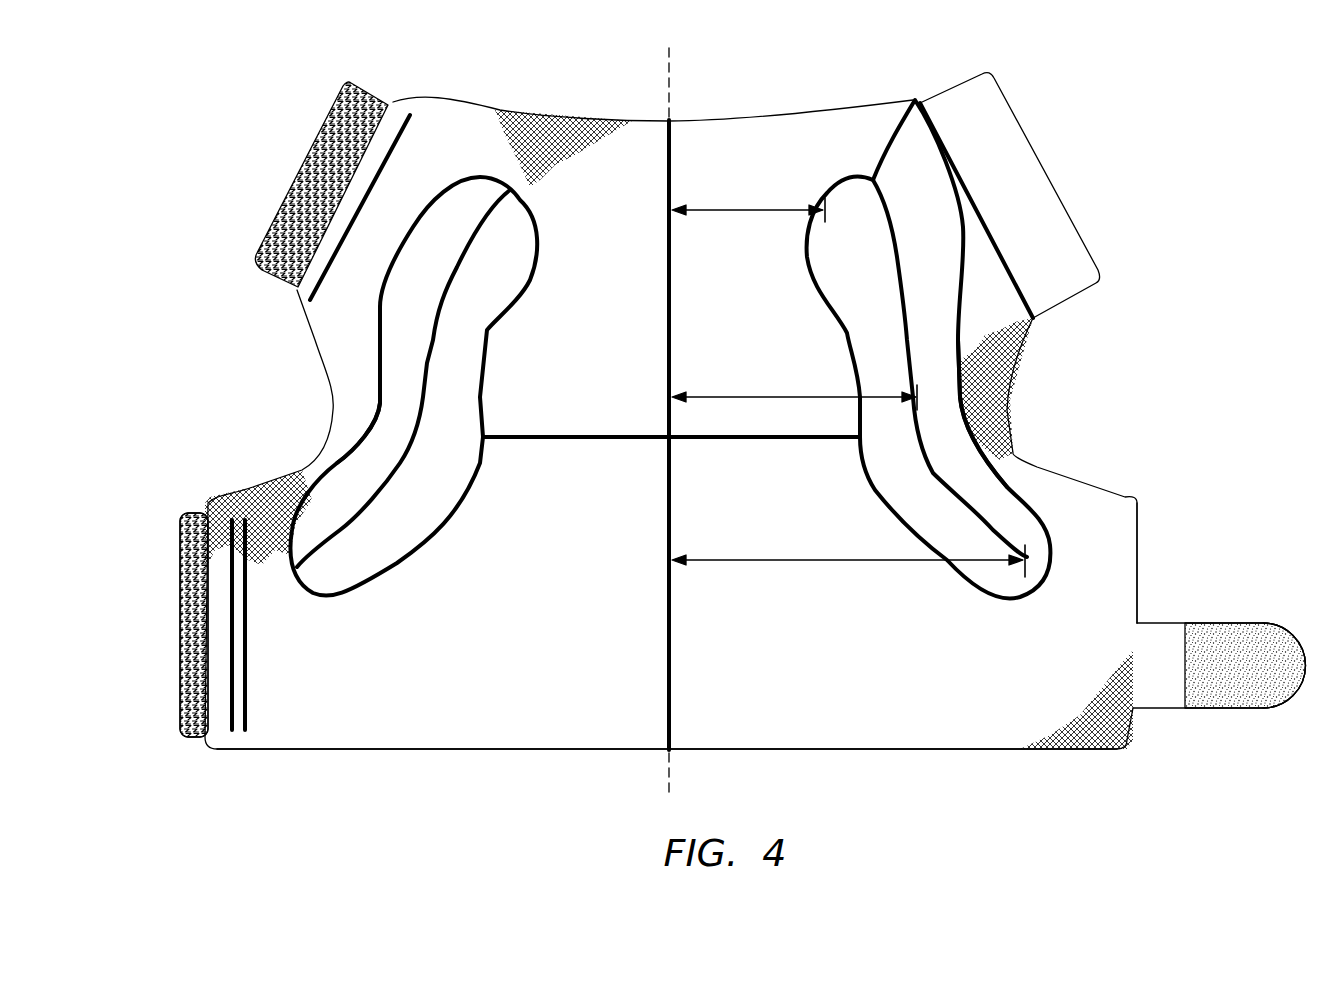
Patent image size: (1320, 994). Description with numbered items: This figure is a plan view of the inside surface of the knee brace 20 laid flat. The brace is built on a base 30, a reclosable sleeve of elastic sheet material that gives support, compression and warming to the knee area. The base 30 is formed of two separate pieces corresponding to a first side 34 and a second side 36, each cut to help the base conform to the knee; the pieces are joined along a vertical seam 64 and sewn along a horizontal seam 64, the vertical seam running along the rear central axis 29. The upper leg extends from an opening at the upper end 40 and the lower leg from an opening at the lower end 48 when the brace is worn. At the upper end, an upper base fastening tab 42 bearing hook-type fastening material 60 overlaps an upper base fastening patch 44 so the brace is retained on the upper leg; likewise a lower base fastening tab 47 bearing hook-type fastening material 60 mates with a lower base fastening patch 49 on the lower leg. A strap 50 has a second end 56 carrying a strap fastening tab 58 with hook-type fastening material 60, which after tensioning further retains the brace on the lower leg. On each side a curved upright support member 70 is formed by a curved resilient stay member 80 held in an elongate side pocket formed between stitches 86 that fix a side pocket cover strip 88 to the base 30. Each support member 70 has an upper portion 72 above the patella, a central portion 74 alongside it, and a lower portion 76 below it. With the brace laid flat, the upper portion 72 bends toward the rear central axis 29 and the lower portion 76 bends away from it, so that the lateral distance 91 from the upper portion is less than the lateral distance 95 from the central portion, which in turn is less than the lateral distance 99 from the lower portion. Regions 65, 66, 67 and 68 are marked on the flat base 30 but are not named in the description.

The knee brace 20 is at (1143, 88).
The rear central axis 29 is at (667, 73).
The base 30 is at (1035, 683).
The first side 34 is at (530, 157).
The second side 36 is at (862, 133).
The upper end 40 is at (440, 130).
The upper base fastening tab 42 is at (290, 203).
The upper base fastening patch 44 is at (1027, 180).
The lower base fastening tab 47 is at (186, 640).
The lower end 48 is at (902, 740).
The lower base fastening patch 49 is at (1130, 518).
The strap 50 is at (1165, 683).
The second end 56 is at (1235, 695).
The strap fastening tab 58 is at (1275, 670).
The hook-type fastening material 60 is at (317, 140).
The seam 64 is at (393, 103).
The upper panel 65 is at (603, 170).
The right lower panel 66 is at (737, 607).
The center seam 67 is at (723, 197).
The left lower panel 68 is at (572, 677).
The curved upright support member 70 is at (398, 365).
The upper portion 72 is at (463, 207).
The central portion 74 is at (398, 387).
The lower portion 76 is at (313, 523).
The resilient stay member 80 is at (928, 293).
The stitches 86 is at (305, 570).
The side pocket cover strip 88 is at (413, 510).
The lateral distance 91 is at (763, 207).
The lateral distance 95 is at (773, 392).
The lateral distance 99 is at (783, 554).